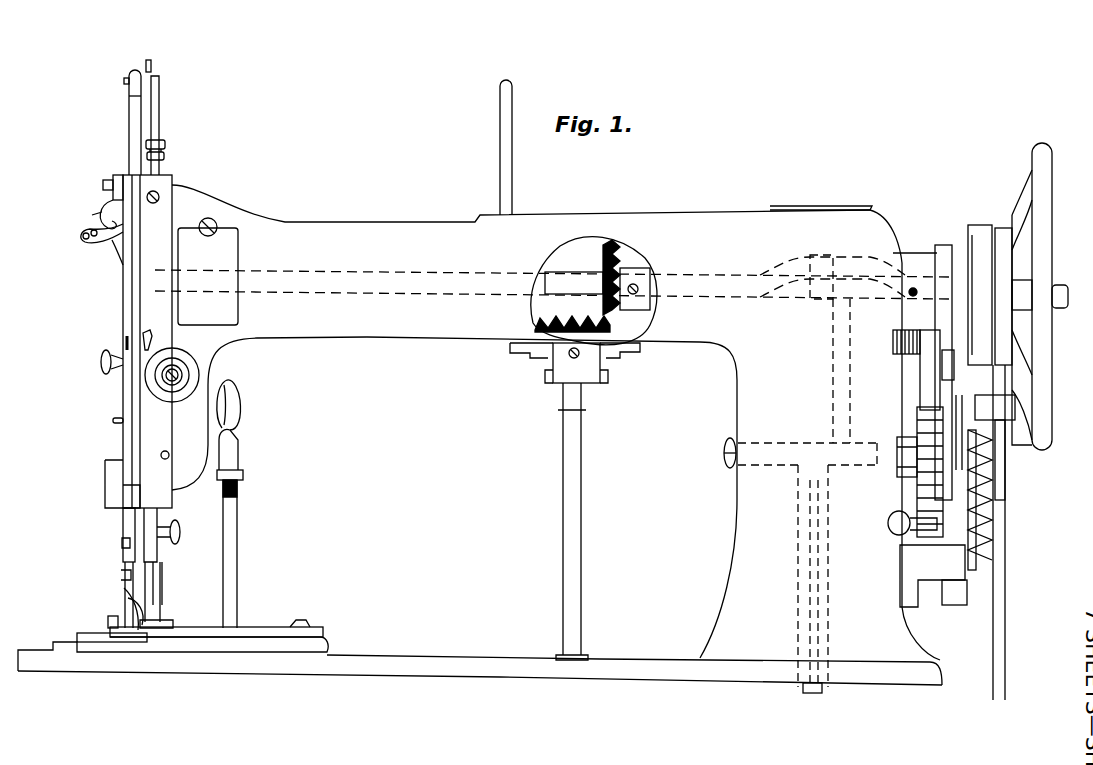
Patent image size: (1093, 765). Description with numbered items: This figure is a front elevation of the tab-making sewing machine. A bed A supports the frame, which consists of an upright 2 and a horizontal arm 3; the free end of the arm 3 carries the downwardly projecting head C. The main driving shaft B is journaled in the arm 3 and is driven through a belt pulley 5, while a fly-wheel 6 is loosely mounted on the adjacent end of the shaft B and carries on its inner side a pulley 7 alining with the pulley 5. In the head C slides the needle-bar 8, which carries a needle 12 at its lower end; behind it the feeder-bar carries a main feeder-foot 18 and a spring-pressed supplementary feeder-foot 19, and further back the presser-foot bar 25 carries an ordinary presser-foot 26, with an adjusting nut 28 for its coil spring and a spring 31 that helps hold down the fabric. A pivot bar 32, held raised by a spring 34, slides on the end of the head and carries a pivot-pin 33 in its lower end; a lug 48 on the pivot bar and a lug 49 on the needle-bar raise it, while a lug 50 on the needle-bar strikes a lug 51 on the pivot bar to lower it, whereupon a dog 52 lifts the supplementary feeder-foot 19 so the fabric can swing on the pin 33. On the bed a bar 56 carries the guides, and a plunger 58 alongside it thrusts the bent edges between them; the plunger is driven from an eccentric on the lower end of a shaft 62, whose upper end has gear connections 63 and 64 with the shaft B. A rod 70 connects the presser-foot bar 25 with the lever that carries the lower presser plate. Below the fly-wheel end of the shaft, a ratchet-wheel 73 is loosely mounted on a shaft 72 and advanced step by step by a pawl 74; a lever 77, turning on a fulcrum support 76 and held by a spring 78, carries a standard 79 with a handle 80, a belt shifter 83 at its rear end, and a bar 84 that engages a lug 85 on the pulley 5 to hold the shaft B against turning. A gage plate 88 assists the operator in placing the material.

The upright 2 is at (807, 474).
The horizontal arm 3 is at (552, 422).
The belt pulley 5 is at (981, 226).
The fly-wheel 6 is at (1052, 160).
The pulley 7 is at (1000, 228).
The needle-bar 8 is at (160, 106).
The needle 12 is at (162, 578).
The feeder-foot 18 is at (158, 624).
The supplementary feeder-foot 19 is at (124, 606).
The presser-foot bar 25 is at (160, 548).
The presser-foot 26 is at (158, 600).
The adjusting nut 28 is at (166, 146).
The spring 31 is at (108, 622).
The pivot bar 32 is at (135, 110).
The pivot-pin 33 is at (124, 583).
The spring 34 is at (105, 208).
The lug 48 is at (124, 81).
The lug 49 is at (150, 72).
The lug 50 is at (124, 516).
The lug 51 is at (121, 543).
The dog 52 is at (120, 573).
The bar 56 is at (325, 642).
The plunger 58 is at (265, 628).
The shaft 62 is at (578, 492).
The gear connection 63 is at (548, 362).
The gear connection 64 is at (618, 255).
The rod 70 is at (232, 542).
The shaft 72 is at (912, 458).
The ratchet-wheel 73 is at (920, 487).
The pawl 74 is at (920, 397).
The fulcrum support 76 is at (990, 520).
The lever 77 is at (1005, 500).
The spring 78 is at (992, 545).
The standard 79 is at (948, 552).
The handle 80 is at (888, 524).
The belt shifter 83 is at (1015, 410).
The bar 84 is at (962, 398).
The lug 85 is at (935, 360).
The gage plate 88 is at (77, 636).
The bed A is at (438, 665).
The main driving shaft B is at (1076, 300).
The head C is at (169, 341).